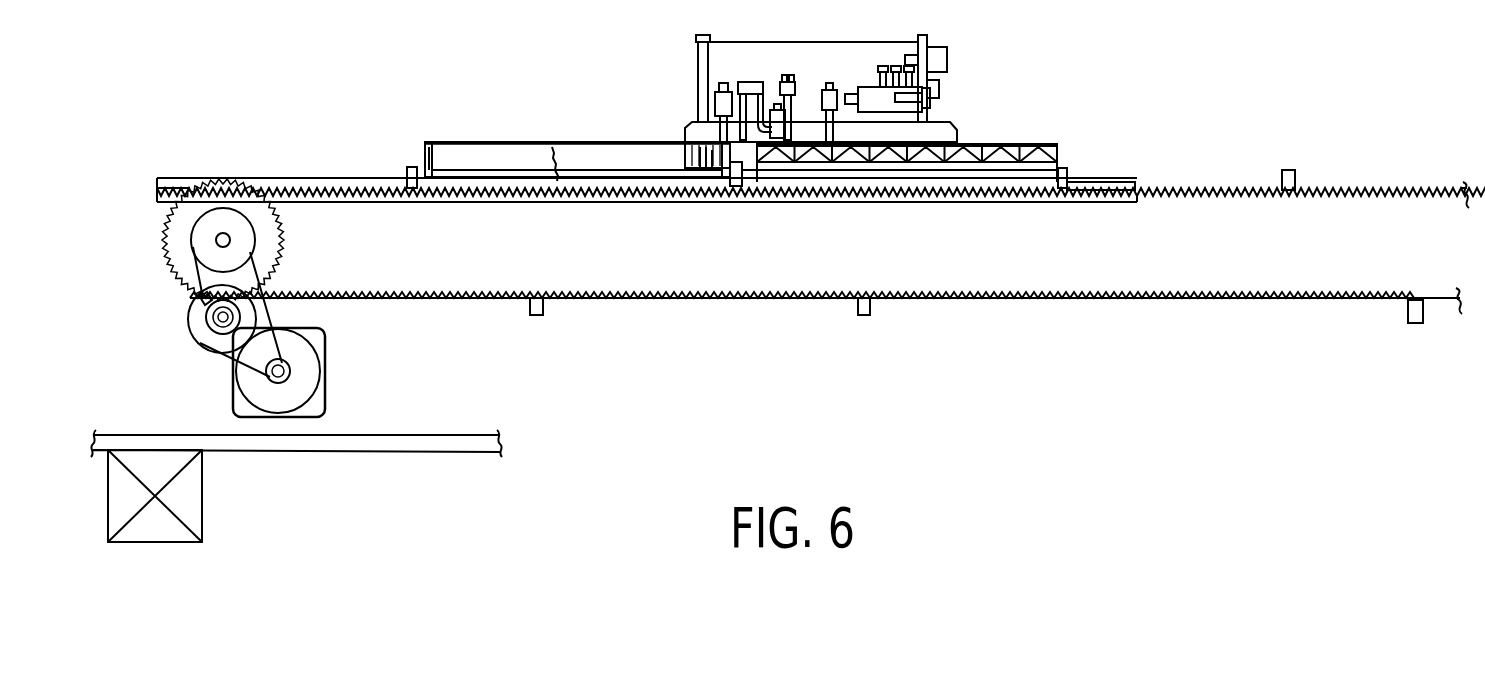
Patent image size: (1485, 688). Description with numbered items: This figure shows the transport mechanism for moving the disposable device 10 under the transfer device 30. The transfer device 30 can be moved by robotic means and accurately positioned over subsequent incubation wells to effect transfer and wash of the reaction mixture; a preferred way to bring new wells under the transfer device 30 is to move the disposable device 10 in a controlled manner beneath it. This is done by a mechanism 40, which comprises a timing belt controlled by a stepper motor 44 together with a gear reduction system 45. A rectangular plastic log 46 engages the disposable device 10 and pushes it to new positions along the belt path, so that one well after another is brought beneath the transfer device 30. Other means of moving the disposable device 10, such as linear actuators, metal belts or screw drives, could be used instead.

The disposable device 10 is at (425, 143).
The transfer device 30 is at (950, 42).
The mechanism 40 is at (172, 275).
The stepper motor 44 is at (323, 393).
The gear reduction system 45 is at (205, 348).
The rectangular plastic log 46 is at (1070, 176).